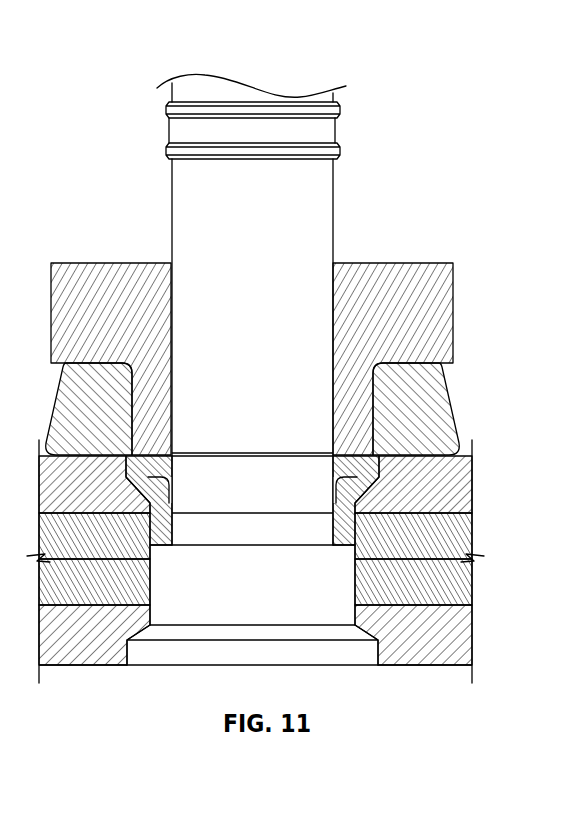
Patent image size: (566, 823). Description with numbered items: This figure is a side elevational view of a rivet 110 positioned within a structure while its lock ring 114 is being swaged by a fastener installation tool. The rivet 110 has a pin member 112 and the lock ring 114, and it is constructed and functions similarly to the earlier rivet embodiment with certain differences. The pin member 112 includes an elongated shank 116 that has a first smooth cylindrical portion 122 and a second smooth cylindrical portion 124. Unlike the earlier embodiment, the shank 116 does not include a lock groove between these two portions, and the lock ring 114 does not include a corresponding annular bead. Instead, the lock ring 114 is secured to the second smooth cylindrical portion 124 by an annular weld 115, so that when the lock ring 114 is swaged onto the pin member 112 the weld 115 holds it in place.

The rivet 110 is at (348, 111).
The pin member 112 is at (318, 219).
The lock ring 114 is at (455, 466).
The annular weld 115 is at (313, 533).
The elongated shank 116 is at (333, 276).
The first smooth cylindrical portion 122 is at (338, 585).
The second smooth cylindrical portion 124 is at (313, 490).